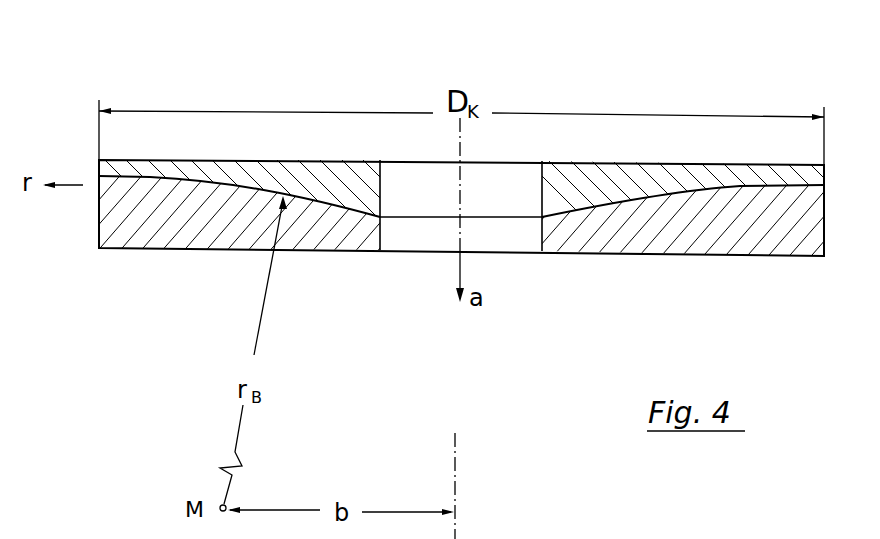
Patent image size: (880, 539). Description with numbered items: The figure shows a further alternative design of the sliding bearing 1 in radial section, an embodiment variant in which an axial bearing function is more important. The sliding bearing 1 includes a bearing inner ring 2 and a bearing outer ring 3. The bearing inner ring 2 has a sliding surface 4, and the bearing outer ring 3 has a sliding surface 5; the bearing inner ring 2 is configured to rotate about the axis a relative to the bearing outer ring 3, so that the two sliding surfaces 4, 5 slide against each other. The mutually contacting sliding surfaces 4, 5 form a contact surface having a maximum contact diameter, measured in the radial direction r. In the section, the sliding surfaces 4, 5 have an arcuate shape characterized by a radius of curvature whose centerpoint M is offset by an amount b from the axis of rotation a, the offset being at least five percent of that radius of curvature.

The sliding bearing 1 is at (686, 80).
The bearing inner ring 2 is at (140, 228).
The bearing outer ring 3 is at (756, 178).
The sliding surface 4 is at (215, 182).
The sliding surface 5 is at (262, 196).